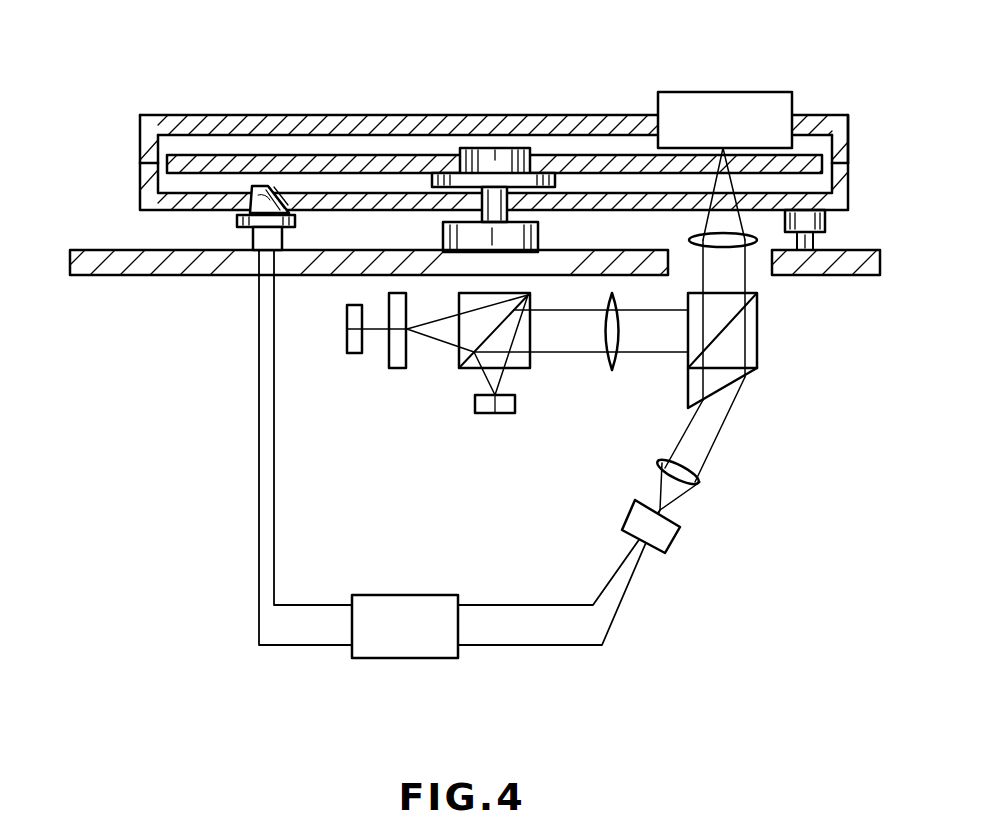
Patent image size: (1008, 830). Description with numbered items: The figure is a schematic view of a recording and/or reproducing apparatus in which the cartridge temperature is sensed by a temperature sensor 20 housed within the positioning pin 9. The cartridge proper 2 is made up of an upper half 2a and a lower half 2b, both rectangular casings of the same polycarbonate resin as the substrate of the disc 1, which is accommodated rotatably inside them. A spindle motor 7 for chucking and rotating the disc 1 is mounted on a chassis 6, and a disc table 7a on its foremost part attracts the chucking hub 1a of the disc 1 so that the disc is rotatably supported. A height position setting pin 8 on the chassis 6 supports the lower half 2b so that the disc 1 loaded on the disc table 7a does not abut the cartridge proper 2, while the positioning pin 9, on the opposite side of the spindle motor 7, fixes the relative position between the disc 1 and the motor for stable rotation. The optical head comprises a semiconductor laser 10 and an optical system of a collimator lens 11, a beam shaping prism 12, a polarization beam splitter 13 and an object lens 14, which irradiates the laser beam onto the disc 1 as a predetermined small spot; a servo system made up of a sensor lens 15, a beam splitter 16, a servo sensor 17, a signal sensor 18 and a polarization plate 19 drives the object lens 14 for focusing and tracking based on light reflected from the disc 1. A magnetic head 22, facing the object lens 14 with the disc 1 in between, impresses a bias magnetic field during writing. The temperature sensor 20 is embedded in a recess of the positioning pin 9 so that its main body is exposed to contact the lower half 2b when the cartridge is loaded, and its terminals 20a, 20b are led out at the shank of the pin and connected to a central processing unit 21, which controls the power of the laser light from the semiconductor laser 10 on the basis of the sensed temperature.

The disc 1 is at (325, 160).
The chucking hub 1a is at (480, 157).
The cartridge proper 2 is at (445, 157).
The upper half 2a is at (140, 128).
The lower half 2b is at (463, 186).
The chassis 6 is at (102, 272).
The spindle motor 7 is at (538, 236).
The disc table 7a is at (545, 172).
The height position setting pin 8 is at (825, 224).
The positioning pin 9 is at (295, 226).
The semiconductor laser 10 is at (680, 530).
The collimator lens 11 is at (700, 479).
The beam shaping prism 12 is at (750, 378).
The polarization beam splitter 13 is at (757, 350).
The object lens 14 is at (750, 243).
The sensor lens 15 is at (613, 371).
The beam splitter 16 is at (530, 366).
The servo sensor 17 is at (495, 414).
The signal sensor 18 is at (355, 354).
The polarization plate 19 is at (400, 369).
The temperature sensor 20 is at (252, 200).
The terminal 20a is at (259, 318).
The terminal 20b is at (274, 312).
The central processing unit 21 is at (405, 660).
The magnetic head 22 is at (722, 120).